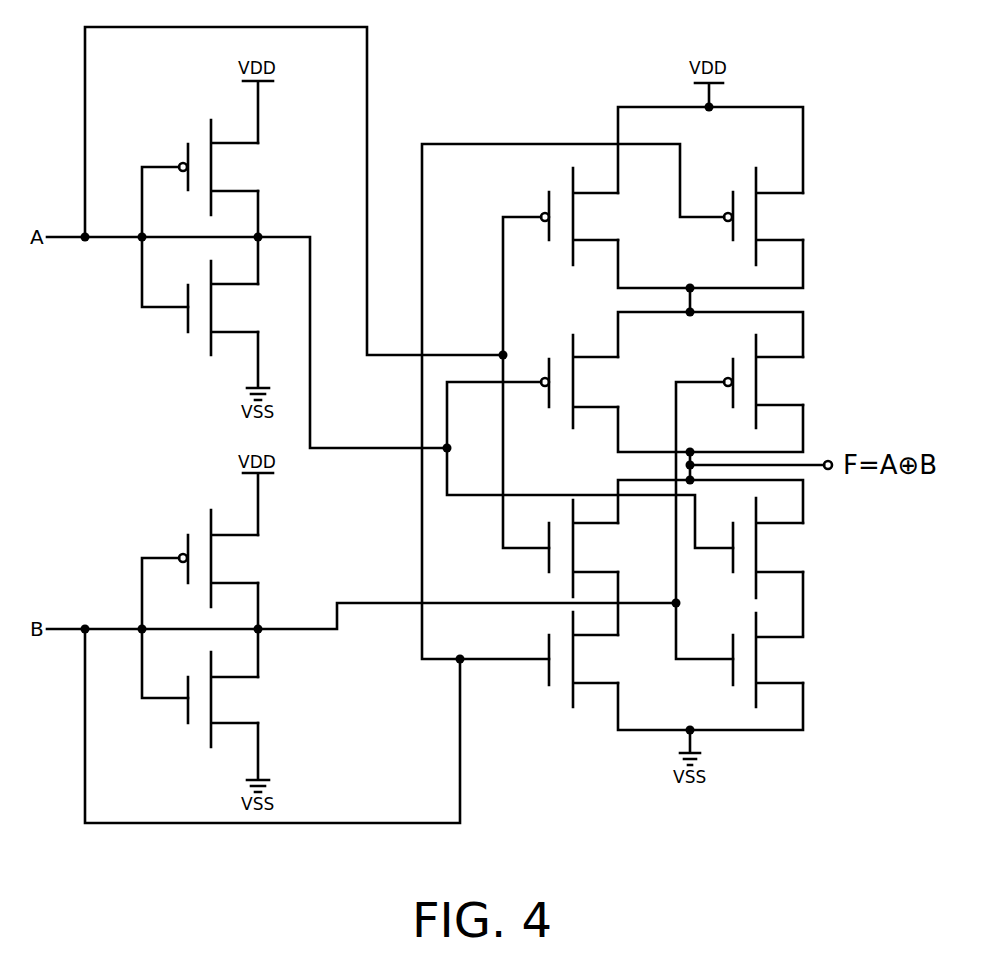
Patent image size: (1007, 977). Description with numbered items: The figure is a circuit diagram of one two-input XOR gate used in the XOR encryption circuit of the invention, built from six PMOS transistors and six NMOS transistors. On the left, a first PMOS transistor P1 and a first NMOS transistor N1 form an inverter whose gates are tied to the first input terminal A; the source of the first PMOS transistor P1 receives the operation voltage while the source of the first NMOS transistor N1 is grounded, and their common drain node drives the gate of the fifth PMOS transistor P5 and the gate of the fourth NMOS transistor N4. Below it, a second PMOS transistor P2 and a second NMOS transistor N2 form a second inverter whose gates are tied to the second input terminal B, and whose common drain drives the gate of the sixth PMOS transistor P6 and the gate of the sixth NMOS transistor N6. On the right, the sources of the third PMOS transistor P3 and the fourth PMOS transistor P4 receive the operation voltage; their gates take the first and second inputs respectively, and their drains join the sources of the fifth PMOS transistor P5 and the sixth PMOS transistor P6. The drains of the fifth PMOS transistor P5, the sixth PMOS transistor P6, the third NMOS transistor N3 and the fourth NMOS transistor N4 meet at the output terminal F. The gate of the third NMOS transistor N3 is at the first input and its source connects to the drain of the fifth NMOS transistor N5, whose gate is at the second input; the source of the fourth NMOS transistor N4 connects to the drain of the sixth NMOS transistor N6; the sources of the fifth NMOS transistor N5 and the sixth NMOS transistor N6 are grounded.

The first PMOS transistor P1 is at (235, 167).
The first NMOS transistor N1 is at (240, 308).
The second PMOS transistor P2 is at (235, 558).
The second NMOS transistor N2 is at (240, 699).
The third PMOS transistor P3 is at (598, 216).
The fourth PMOS transistor P4 is at (779, 216).
The fifth PMOS transistor P5 is at (595, 381).
The sixth PMOS transistor P6 is at (779, 381).
The third NMOS transistor N3 is at (604, 548).
The fourth NMOS transistor N4 is at (786, 548).
The fifth NMOS transistor N5 is at (604, 659).
The sixth NMOS transistor N6 is at (786, 660).